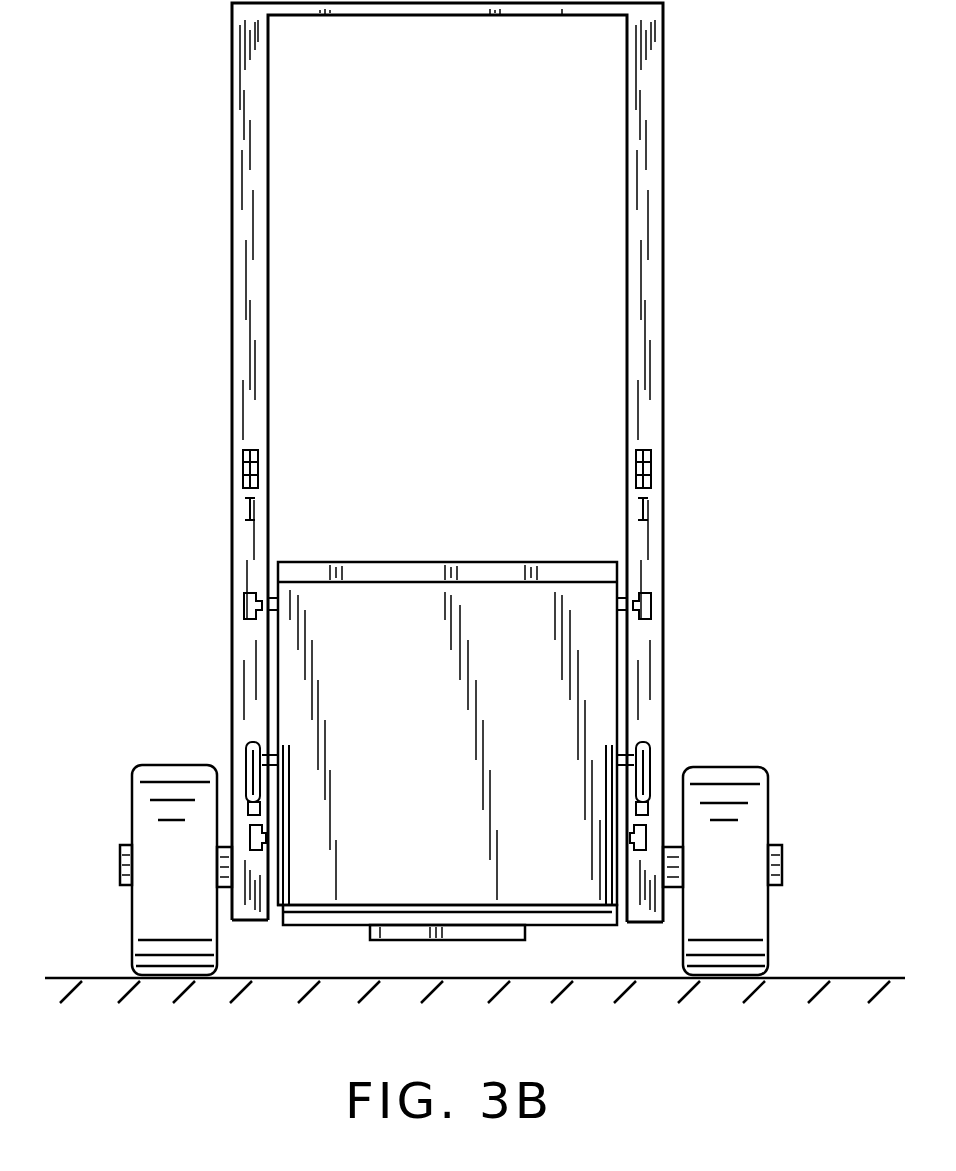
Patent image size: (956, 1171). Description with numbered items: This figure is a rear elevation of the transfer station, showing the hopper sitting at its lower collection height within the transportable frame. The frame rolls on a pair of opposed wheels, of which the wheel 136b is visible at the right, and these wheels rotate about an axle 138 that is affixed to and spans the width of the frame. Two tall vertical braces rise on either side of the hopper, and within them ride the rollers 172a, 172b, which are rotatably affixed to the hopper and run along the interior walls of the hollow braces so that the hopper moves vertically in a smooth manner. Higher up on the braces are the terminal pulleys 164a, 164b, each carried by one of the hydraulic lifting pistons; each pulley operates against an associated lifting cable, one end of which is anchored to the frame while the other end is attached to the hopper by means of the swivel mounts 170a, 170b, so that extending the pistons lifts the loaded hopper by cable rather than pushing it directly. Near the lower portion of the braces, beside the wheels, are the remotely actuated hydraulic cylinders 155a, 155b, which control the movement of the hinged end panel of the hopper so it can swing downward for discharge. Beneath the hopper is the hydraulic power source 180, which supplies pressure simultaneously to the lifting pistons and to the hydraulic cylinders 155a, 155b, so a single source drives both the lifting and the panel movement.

The terminal pulley 164a is at (232, 470).
The terminal pulley 164b is at (653, 472).
The roller 172a is at (232, 607).
The roller 172b is at (653, 607).
The hydraulic cylinder 155a is at (250, 760).
The hydraulic cylinder 155b is at (645, 760).
The swivel mount 170a is at (282, 775).
The swivel mount 170b is at (616, 775).
The wheel 136b is at (742, 798).
The axle 138 is at (784, 858).
The hydraulic power source 180 is at (368, 938).